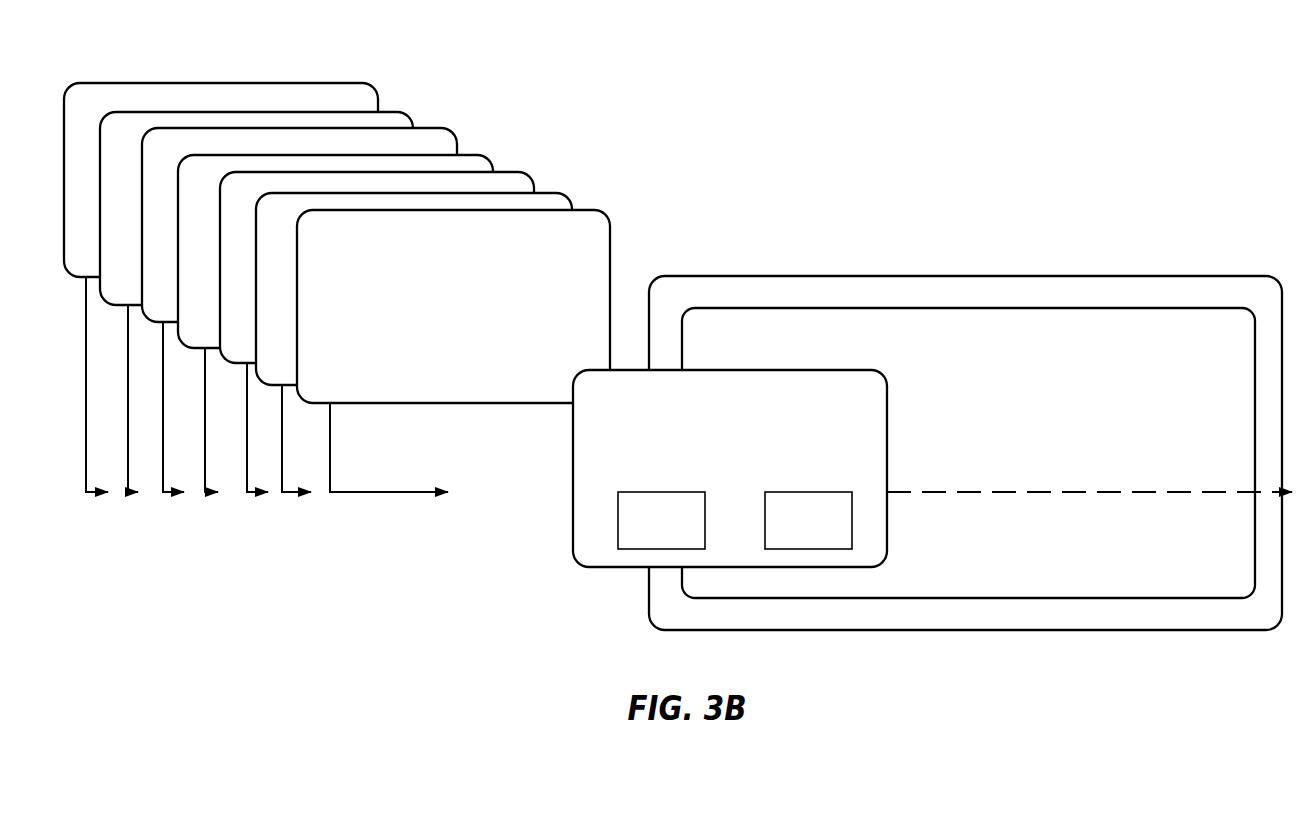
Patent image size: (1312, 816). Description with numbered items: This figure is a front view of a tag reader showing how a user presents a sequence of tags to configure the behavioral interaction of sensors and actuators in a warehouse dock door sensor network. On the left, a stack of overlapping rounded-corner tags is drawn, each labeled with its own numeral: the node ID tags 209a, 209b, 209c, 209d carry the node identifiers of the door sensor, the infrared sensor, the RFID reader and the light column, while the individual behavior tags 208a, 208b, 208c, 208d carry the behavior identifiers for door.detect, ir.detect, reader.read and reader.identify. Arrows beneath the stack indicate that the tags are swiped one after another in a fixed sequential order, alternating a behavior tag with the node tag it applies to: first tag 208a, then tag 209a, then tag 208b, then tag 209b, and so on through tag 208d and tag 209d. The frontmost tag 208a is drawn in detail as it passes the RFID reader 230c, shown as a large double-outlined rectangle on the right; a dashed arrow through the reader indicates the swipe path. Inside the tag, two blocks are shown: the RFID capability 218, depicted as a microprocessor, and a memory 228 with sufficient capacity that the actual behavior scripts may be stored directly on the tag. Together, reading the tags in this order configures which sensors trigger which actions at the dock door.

The behavior tag 208a is at (703, 468).
The behavior tag 208b is at (553, 193).
The behavior tag 208c is at (478, 155).
The behavior tag 208d is at (398, 112).
The node ID tag 209a is at (594, 210).
The node ID tag 209b is at (518, 172).
The node ID tag 209c is at (440, 128).
The node ID tag 209d is at (362, 83).
The RFID capability 218 is at (648, 542).
The memory 228 is at (796, 542).
The RFID reader 230c is at (965, 276).